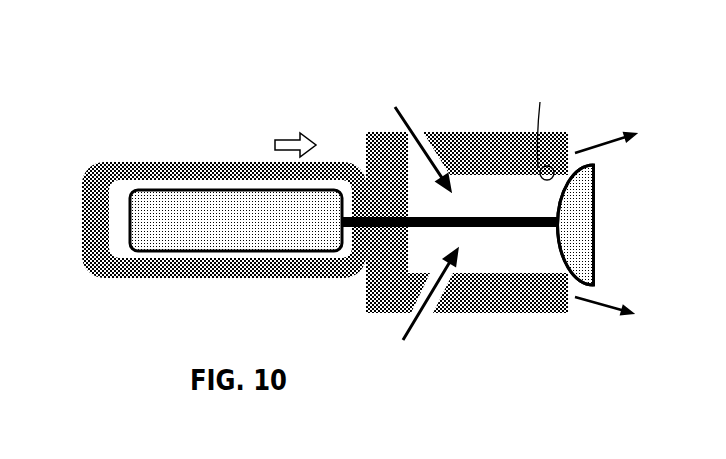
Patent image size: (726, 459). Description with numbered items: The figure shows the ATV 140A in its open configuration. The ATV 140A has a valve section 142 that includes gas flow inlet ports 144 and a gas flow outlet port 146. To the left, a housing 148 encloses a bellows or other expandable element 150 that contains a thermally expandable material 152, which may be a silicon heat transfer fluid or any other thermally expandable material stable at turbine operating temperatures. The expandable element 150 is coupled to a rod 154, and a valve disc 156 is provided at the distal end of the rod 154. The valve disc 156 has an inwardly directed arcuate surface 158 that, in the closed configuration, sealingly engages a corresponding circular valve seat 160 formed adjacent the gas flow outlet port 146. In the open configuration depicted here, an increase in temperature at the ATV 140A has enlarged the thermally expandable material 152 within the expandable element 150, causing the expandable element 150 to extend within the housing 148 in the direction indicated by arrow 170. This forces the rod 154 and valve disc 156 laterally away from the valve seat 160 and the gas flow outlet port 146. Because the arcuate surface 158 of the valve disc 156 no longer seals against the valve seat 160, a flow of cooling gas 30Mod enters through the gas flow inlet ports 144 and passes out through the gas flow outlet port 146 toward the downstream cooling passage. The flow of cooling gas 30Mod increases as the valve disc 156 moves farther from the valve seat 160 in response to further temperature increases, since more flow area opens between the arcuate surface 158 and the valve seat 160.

The ATV 140A is at (63, 132).
The valve section 142 is at (483, 133).
The gas flow inlet ports 144 is at (418, 128).
The gas flow outlet port 146 is at (580, 140).
The housing 148 is at (162, 277).
The expandable element 150 is at (178, 190).
The thermally expandable material 152 is at (243, 232).
The rod 154 is at (388, 227).
The valve disc 156 is at (598, 240).
The arcuate surface 158 is at (558, 247).
The valve seat 160 is at (548, 130).
The arrow 170 is at (292, 133).
The flow of cooling gas 30Mod is at (407, 222).